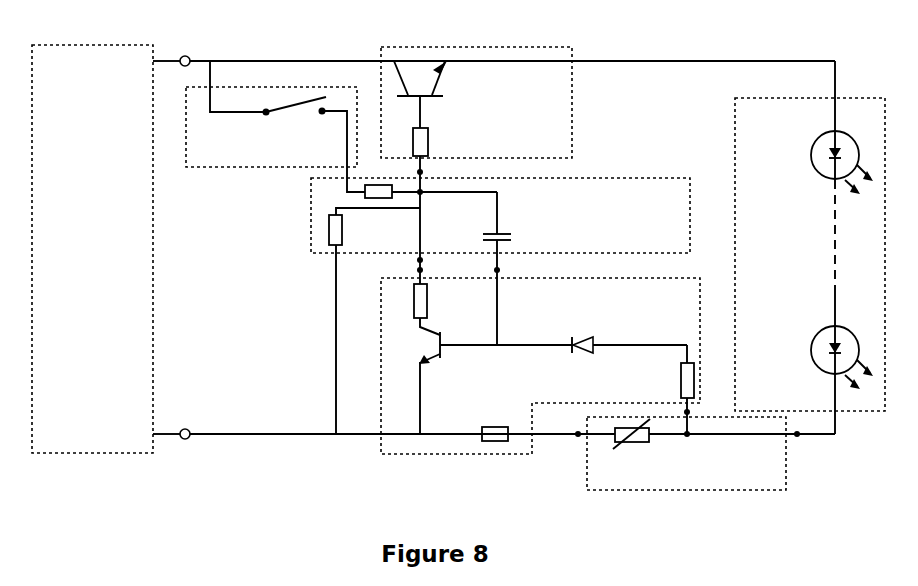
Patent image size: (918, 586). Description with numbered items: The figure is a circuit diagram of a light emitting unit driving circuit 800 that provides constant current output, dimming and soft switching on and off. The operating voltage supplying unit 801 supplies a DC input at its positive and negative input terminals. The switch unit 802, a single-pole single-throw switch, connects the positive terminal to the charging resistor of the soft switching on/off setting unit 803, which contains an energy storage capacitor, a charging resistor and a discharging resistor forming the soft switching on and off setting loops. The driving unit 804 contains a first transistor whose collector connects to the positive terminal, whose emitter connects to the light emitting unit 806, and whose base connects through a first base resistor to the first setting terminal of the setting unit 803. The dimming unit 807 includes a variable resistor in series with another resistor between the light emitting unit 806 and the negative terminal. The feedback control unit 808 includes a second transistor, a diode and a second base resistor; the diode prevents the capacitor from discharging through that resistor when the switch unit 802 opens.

The light emitting unit driving circuit 800 is at (572, 47).
The operating voltage supplying unit 801 is at (92, 249).
The switch unit 802 is at (275, 126).
The soft switching on/off setting unit 803 is at (500, 306).
The driving unit 804 is at (476, 119).
The light emitting unit 806 is at (810, 247).
The dimming unit 807 is at (688, 453).
The feedback control unit 808 is at (540, 366).